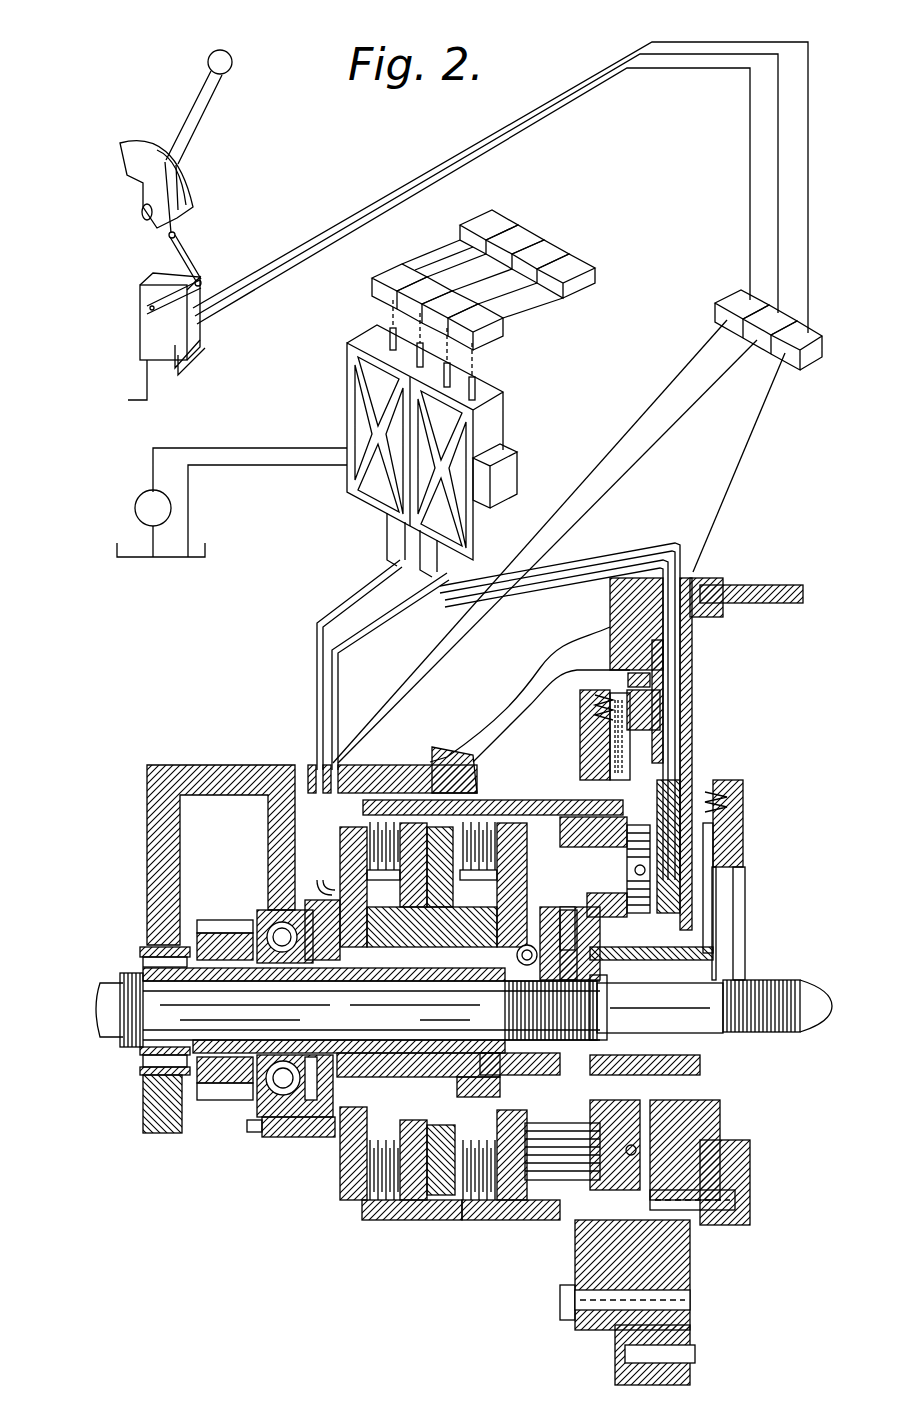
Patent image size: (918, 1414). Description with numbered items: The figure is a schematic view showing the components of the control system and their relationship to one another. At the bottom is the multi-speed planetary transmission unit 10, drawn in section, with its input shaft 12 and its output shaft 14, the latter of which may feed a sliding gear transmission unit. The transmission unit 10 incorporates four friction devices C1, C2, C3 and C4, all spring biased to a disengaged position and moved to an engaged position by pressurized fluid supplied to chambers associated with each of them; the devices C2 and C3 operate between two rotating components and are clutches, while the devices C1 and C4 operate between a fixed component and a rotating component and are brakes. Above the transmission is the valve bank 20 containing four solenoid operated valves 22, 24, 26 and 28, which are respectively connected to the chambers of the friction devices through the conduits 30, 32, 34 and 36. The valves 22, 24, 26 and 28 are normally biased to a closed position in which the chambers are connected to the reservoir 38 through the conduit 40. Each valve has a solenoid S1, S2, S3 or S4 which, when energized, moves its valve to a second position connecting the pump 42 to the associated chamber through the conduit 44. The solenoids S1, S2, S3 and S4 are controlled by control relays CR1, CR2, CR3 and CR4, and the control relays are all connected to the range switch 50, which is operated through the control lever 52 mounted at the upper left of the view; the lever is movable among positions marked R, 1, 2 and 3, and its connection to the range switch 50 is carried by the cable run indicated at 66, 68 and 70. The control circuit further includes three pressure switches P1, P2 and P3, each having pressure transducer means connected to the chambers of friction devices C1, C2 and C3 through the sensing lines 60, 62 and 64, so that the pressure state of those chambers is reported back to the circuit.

The reverse lever position R is at (205, 52).
The first gear lever position 1 is at (177, 52).
The second gear lever position 2 is at (230, 58).
The third gear lever position 3 is at (240, 78).
The control lever 52 is at (182, 113).
The range switch 50 is at (158, 324).
The cable 66 is at (667, 42).
The cable 68 is at (772, 50).
The cable 70 is at (690, 70).
The control relay CR1 is at (573, 268).
The control relay CR2 is at (563, 248).
The control relay CR3 is at (540, 232).
The control relay CR4 is at (518, 195).
The solenoid S1 is at (490, 342).
The solenoid S2 is at (485, 320).
The solenoid S3 is at (405, 296).
The solenoid S4 is at (392, 272).
The pressure switch P1 is at (815, 333).
The pressure switch P2 is at (780, 325).
The pressure switch P3 is at (728, 298).
The valve bank 20 is at (344, 517).
The solenoid operated valve 22 is at (495, 404).
The solenoid operated valve 24 is at (466, 400).
The solenoid operated valve 26 is at (440, 380).
The solenoid operated valve 28 is at (385, 346).
The conduit 44 is at (200, 448).
The pump 42 is at (140, 500).
The conduit 40 is at (190, 517).
The reservoir 38 is at (117, 545).
The sensing line 64 is at (664, 400).
The sensing line 62 is at (683, 425).
The sensing line 60 is at (738, 460).
The conduit 30 is at (578, 562).
The conduit 36 is at (520, 586).
The conduit 34 is at (342, 620).
The conduit 32 is at (362, 632).
The multi-speed planetary transmission unit 10 is at (246, 708).
The output shaft 14 is at (105, 990).
The input shaft 12 is at (800, 1035).
The friction device C1 is at (732, 843).
The friction device C2 is at (476, 1215).
The friction device C3 is at (362, 1215).
The friction device C4 is at (658, 752).